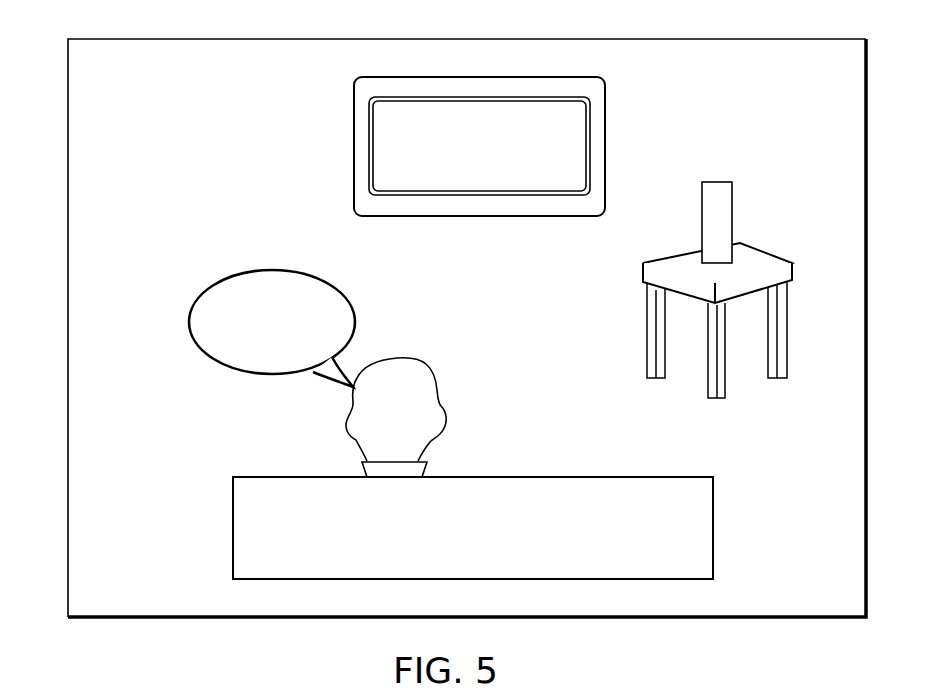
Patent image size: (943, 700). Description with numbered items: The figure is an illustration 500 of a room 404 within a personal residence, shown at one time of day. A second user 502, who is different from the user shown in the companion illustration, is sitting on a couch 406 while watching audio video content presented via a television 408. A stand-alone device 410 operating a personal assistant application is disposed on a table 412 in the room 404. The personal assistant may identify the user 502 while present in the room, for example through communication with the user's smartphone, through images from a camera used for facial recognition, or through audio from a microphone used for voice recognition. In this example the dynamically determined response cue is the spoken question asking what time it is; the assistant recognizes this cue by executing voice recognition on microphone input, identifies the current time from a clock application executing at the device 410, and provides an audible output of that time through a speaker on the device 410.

The illustration 500 is at (105, 25).
The room 404 is at (68, 327).
The couch 406 is at (233, 527).
The television 408 is at (354, 146).
The stand-alone device 410 is at (702, 230).
The table 412 is at (643, 270).
The second user 502 is at (348, 417).